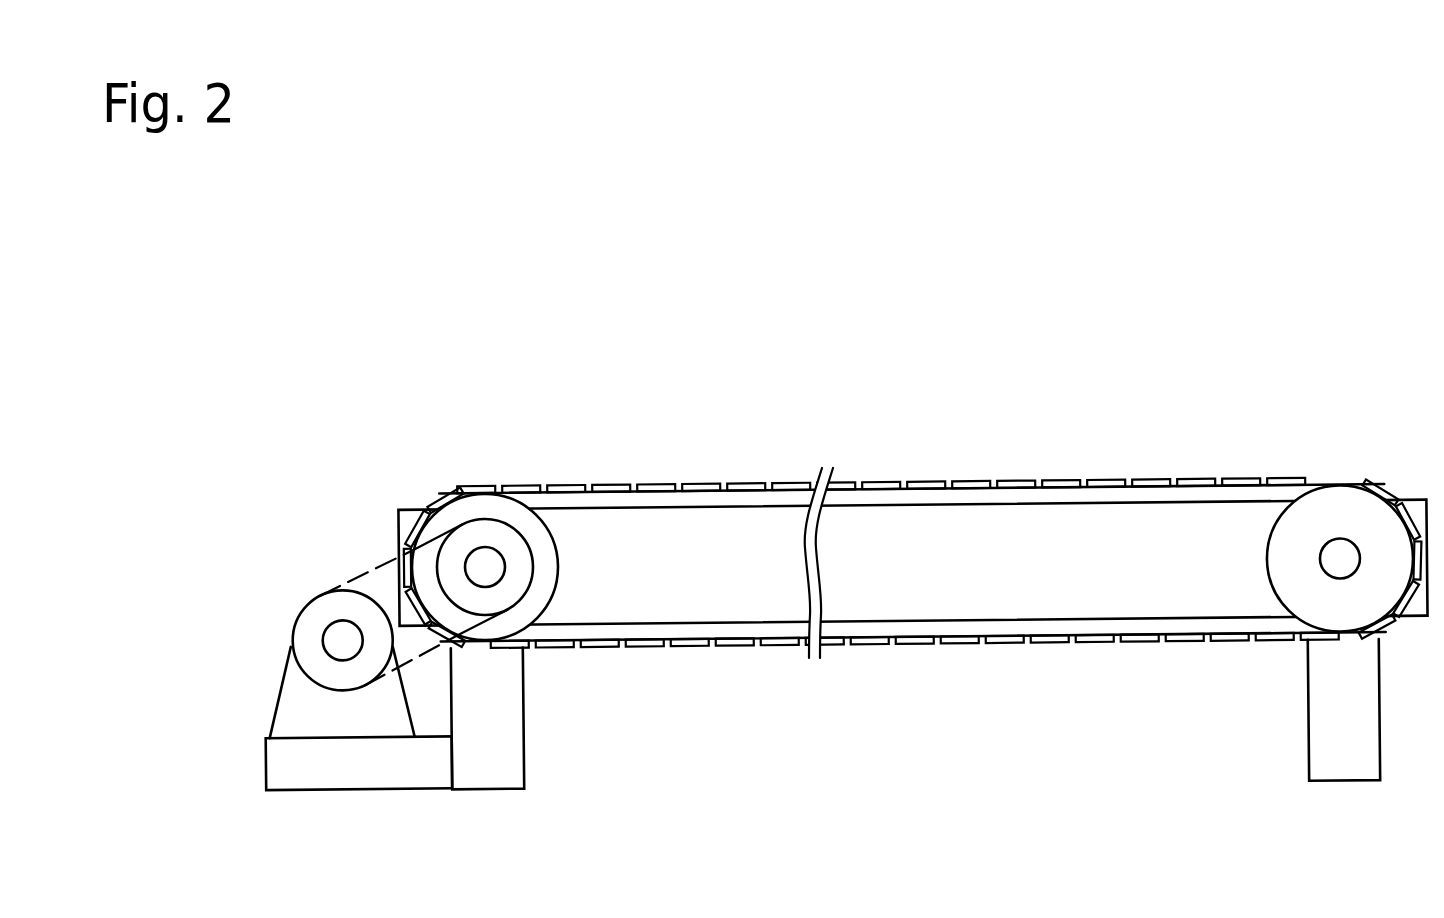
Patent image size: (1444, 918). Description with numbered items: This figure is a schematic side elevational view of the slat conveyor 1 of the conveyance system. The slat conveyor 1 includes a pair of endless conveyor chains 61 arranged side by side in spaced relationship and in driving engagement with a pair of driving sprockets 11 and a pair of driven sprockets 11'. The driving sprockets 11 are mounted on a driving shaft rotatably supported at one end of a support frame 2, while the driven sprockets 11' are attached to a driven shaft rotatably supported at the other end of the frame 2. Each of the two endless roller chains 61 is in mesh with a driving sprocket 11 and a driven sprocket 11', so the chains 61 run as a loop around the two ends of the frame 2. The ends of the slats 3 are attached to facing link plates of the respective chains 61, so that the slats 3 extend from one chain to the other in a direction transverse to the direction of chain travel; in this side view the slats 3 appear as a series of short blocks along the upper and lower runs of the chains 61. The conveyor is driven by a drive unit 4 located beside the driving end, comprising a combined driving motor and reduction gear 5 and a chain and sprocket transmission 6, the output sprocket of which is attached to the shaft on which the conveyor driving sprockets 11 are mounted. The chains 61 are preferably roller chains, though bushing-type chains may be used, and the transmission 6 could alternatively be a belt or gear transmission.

The slat conveyor 1 is at (1253, 421).
The support frame 2 is at (605, 603).
The slats 3 is at (744, 487).
The drive unit 4 is at (167, 478).
The combined driving motor and reduction gear 5 is at (250, 711).
The chain and sprocket transmission 6 is at (296, 568).
The driving sprockets 11 is at (484, 508).
The driven sprockets 11' is at (1339, 501).
The endless conveyor chains 61 is at (612, 488).